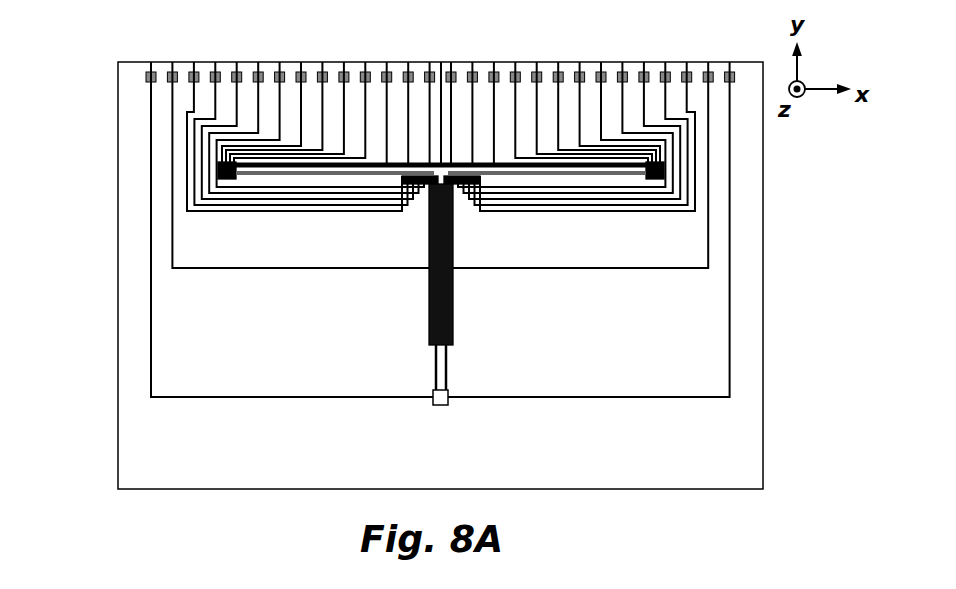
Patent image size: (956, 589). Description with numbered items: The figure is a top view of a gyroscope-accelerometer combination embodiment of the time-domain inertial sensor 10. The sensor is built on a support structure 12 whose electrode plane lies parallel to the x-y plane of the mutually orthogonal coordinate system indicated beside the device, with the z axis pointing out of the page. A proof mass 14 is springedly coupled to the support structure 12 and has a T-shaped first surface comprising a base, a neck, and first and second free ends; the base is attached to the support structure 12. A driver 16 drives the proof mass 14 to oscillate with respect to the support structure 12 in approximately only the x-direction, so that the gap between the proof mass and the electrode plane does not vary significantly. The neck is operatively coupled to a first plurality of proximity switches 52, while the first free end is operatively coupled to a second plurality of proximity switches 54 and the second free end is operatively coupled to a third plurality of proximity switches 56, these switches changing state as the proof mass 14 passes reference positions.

The time-domain inertial sensor 10 is at (87, 39).
The support structure 12 is at (763, 418).
The proof mass 14 is at (436, 372).
The driver 16 is at (453, 300).
The first plurality of proximity switches 52 is at (401, 188).
The second plurality of proximity switches 54 is at (241, 188).
The third plurality of proximity switches 56 is at (631, 187).